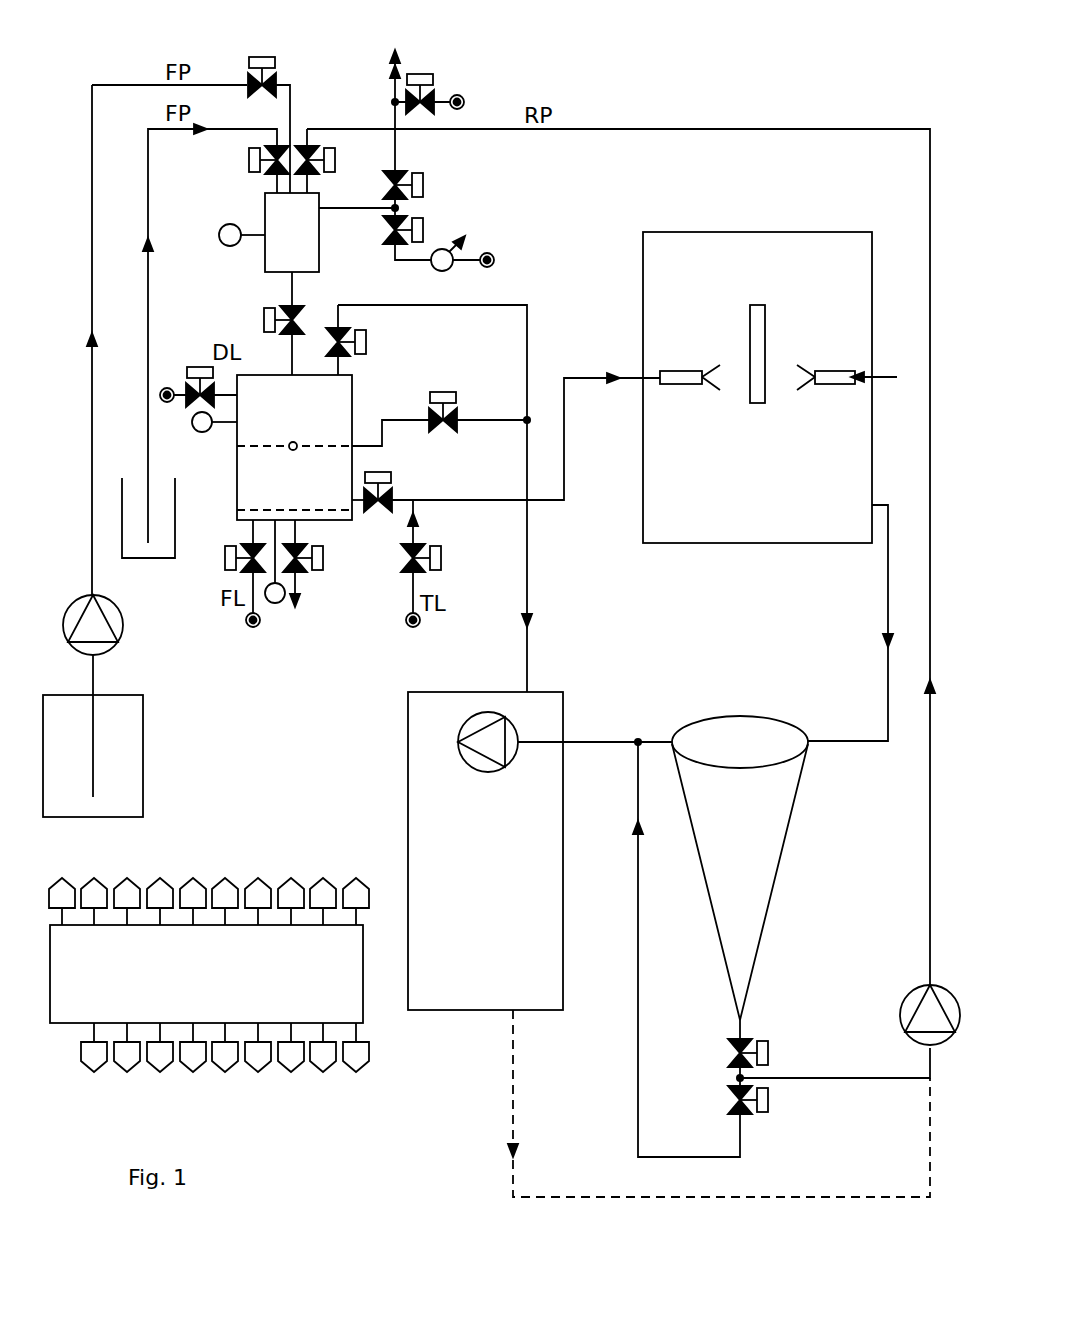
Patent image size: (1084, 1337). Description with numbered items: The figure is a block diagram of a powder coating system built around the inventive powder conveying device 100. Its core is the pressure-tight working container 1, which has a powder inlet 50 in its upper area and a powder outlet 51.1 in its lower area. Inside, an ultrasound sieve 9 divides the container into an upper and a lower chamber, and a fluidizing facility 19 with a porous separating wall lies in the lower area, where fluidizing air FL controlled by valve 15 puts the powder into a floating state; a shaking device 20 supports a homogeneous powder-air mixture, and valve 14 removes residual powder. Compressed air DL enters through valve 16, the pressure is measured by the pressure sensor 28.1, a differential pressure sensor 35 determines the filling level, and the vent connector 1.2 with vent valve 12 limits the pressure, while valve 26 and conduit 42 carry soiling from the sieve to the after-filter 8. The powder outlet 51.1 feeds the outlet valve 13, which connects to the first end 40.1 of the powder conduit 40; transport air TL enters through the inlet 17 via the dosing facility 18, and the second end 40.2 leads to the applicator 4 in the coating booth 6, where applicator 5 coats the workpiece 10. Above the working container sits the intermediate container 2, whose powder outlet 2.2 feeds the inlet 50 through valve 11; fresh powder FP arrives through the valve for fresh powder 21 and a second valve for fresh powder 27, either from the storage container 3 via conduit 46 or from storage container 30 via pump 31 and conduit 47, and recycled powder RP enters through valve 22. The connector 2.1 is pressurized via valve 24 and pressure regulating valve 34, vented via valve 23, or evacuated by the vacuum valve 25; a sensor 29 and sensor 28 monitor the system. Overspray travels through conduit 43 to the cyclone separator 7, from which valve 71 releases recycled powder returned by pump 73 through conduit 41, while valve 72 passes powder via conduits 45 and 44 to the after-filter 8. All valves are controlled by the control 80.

The working container 1 is at (352, 406).
The vent connector 1.2 is at (352, 370).
The intermediate container 2 is at (265, 224).
The connector on the intermediate container 2.1 is at (319, 210).
The powder outlet of the intermediate container 2.2 is at (305, 272).
The storage container 3 is at (160, 560).
The applicator 4 is at (680, 371).
The applicator 5 is at (836, 371).
The coating booth 6 is at (722, 232).
The cyclone separator 7 is at (776, 882).
The after-filter 8 is at (408, 822).
The ultrasound sieve 9 is at (245, 446).
The workpiece 10 is at (757, 305).
The valve 11 is at (264, 315).
The vent valve 12 is at (368, 340).
The outlet valve 13 is at (385, 472).
The valve 14 is at (325, 562).
The valve 15 is at (225, 556).
The valve 16 is at (200, 366).
The inlet for transport air 17 is at (425, 503).
The dosing facility for the transport air 18 is at (445, 563).
The fluidizing facility 19 is at (238, 510).
The shaking device 20 is at (281, 603).
The valve for fresh powder 21 is at (248, 160).
The valve 22 is at (336, 160).
The valve 23 is at (424, 186).
The valve 24 is at (424, 230).
The vacuum valve or vacuum generator 25 is at (425, 75).
The valve 26 is at (445, 392).
The valve for fresh powder 27 is at (276, 62).
The sensor 28 is at (94, 1047).
The pressure sensor 28.1 is at (196, 430).
The sensor 29 is at (222, 241).
The storage container 30 is at (143, 738).
The pump 31 is at (122, 630).
The pressure regulating valve 34 is at (450, 268).
The differential pressure sensor 35 is at (160, 1047).
The powder conduit 40 is at (598, 378).
The first end of the powder conduit 40.1 is at (425, 498).
The second end of the powder conduit 40.2 is at (643, 370).
The conduit 41 is at (660, 129).
The conduit 42 is at (528, 576).
The conduit 43 is at (860, 741).
The conduit 44 is at (585, 741).
The conduit 45 is at (638, 912).
The conduit 46 is at (147, 262).
The conduit 47 is at (92, 322).
The powder inlet 50 is at (283, 383).
The powder outlet 51.1 is at (345, 503).
The valve 71 is at (768, 1055).
The valve 72 is at (768, 1100).
The pump 73 is at (900, 1012).
The control 80 is at (209, 975).
The powder conveying device 100 is at (226, 332).